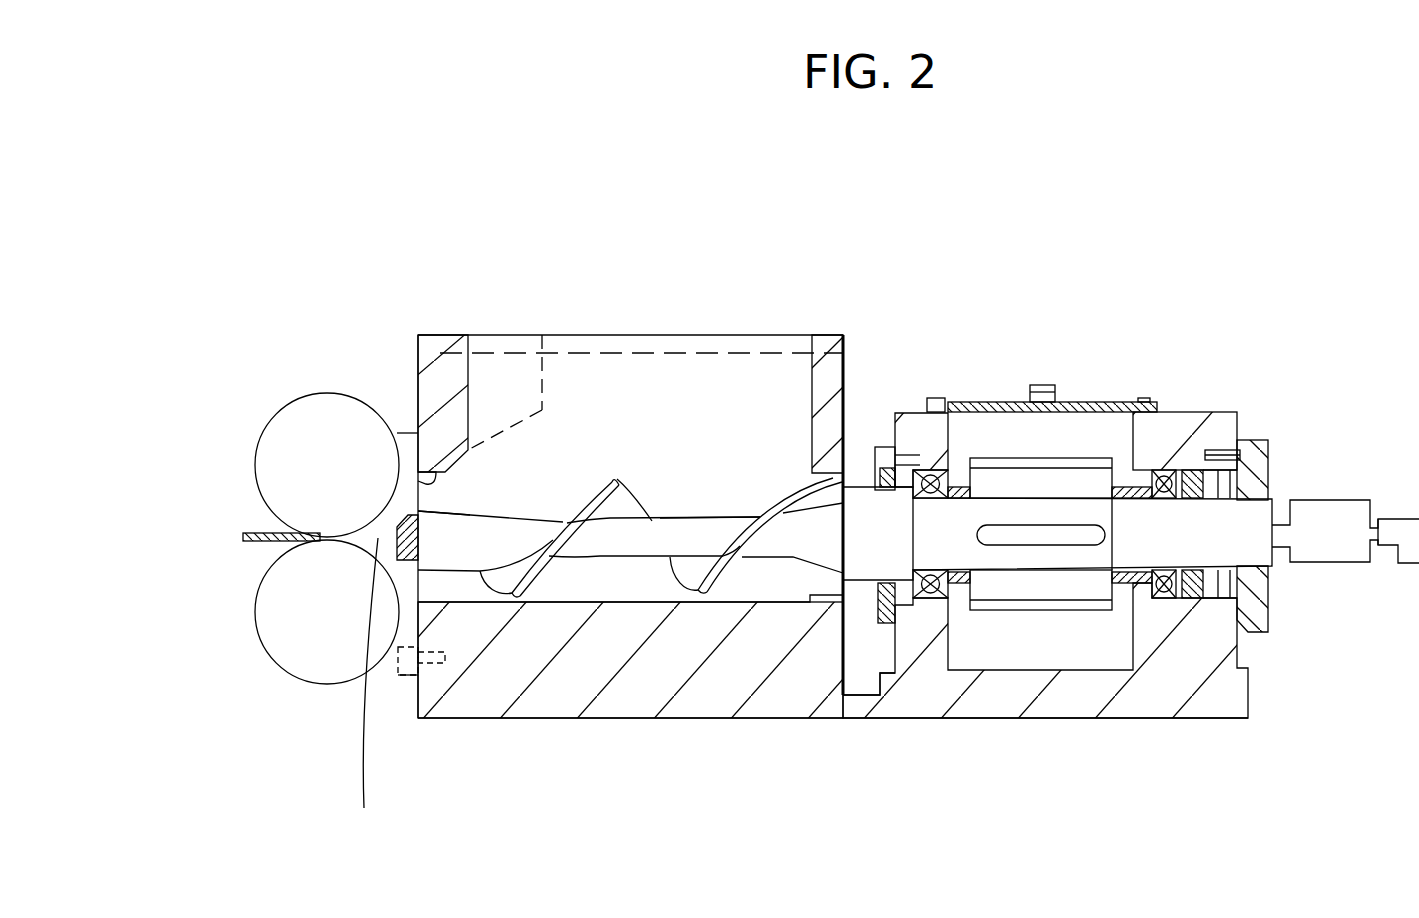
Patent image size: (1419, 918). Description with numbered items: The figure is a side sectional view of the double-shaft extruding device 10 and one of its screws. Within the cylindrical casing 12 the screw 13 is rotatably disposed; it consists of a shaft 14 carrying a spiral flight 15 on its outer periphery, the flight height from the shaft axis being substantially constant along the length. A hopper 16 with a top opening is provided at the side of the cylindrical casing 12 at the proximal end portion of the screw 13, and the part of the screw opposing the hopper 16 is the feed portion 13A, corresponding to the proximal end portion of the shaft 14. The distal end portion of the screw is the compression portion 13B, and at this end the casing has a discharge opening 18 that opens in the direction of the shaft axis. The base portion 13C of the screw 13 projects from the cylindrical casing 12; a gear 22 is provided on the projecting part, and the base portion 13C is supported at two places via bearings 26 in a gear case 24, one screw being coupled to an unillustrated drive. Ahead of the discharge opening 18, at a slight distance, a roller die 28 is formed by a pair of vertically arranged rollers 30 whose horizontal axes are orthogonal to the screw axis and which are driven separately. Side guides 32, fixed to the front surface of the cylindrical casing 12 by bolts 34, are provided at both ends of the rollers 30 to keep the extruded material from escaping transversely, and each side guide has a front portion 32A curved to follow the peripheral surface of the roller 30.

The double-shaft extruding device 10 is at (800, 247).
The cylindrical casing 12 is at (597, 331).
The screw 13 is at (630, 583).
The feed portion 13A is at (700, 506).
The compression portion 13B is at (455, 545).
The base portion 13C is at (1160, 536).
The shaft 14 is at (515, 516).
The spiral flight 15 is at (640, 490).
The hopper 16 is at (727, 335).
The discharge opening 18 is at (410, 470).
The gear 22 is at (992, 458).
The gear case 24 is at (1173, 411).
The bearing 26 is at (932, 470).
The roller die 28 is at (313, 391).
The roller 30 is at (295, 445).
The side guide 32 is at (403, 684).
The front portion 32A is at (340, 692).
The bolt 34 is at (422, 673).